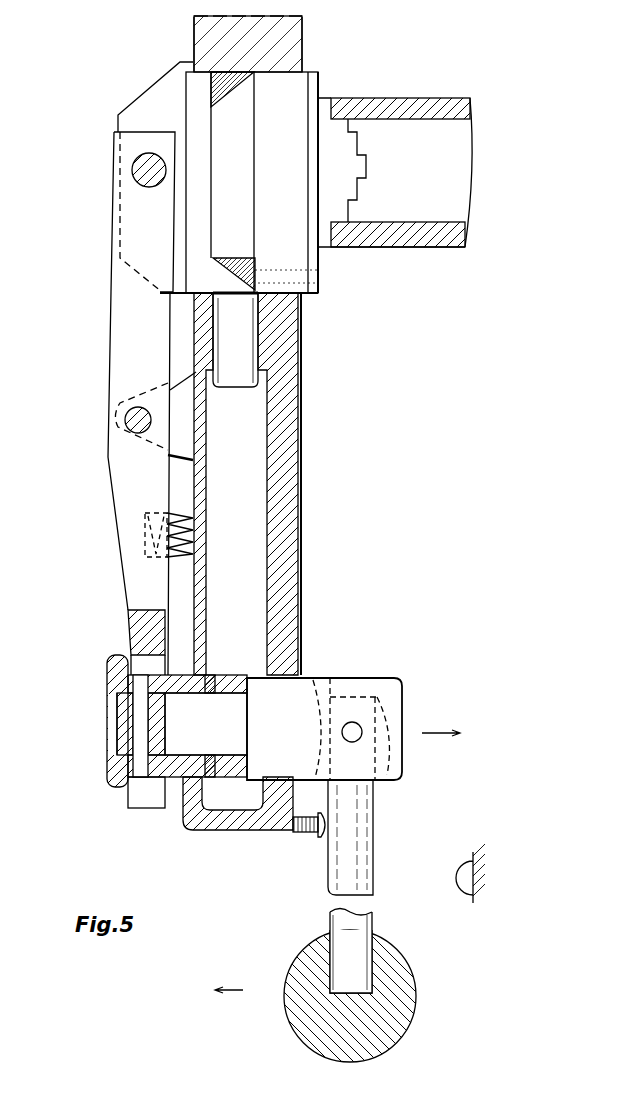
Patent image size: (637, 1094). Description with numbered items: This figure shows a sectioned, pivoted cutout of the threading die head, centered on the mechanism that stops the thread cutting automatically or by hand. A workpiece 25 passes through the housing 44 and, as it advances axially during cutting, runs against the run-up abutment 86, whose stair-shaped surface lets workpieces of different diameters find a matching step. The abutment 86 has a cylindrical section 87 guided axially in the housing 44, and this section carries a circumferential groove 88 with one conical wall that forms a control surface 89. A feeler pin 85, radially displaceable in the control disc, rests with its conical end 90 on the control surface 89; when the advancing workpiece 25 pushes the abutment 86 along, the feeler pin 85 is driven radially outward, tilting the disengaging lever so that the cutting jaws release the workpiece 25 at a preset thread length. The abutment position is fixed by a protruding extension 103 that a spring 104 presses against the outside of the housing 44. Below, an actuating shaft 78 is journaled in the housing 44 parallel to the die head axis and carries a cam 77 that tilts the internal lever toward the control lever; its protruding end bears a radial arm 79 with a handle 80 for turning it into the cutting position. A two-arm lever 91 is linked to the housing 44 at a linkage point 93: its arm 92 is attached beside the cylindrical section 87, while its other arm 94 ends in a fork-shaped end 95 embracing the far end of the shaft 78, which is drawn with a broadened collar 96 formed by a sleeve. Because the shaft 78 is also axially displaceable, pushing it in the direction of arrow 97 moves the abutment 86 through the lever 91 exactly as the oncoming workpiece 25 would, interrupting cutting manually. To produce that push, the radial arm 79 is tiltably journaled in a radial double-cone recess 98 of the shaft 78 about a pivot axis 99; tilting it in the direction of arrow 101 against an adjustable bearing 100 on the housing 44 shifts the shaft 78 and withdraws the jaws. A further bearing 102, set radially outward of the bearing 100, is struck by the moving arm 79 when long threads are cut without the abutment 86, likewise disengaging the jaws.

The workpiece 25 is at (393, 106).
The housing 44 is at (292, 549).
The cam 77 is at (232, 678).
The actuating shaft 78 is at (192, 733).
The radial arm 79 is at (355, 850).
The handle 80 is at (403, 977).
The feeler pin 85 is at (247, 378).
The run-up abutment 86 is at (337, 210).
The cylindrical section 87 is at (303, 294).
The circumferential groove 88 is at (210, 90).
The control surface 89 is at (242, 80).
The conical end 90 is at (238, 288).
The two-arm lever 91 is at (117, 397).
The arm 92 is at (125, 215).
The linkage point 93 is at (126, 426).
The arm 94 is at (127, 565).
The fork-shaped end 95 is at (138, 800).
The bolt head 96 is at (107, 760).
The arrow 97 is at (441, 722).
The radial double-cone recess 98 is at (317, 690).
The pivot axis 99 is at (358, 725).
The bearing 100 is at (318, 838).
The arrow 101 is at (235, 979).
The bearing 102 is at (465, 855).
The protruding extension 103 is at (180, 63).
The spring 104 is at (167, 523).